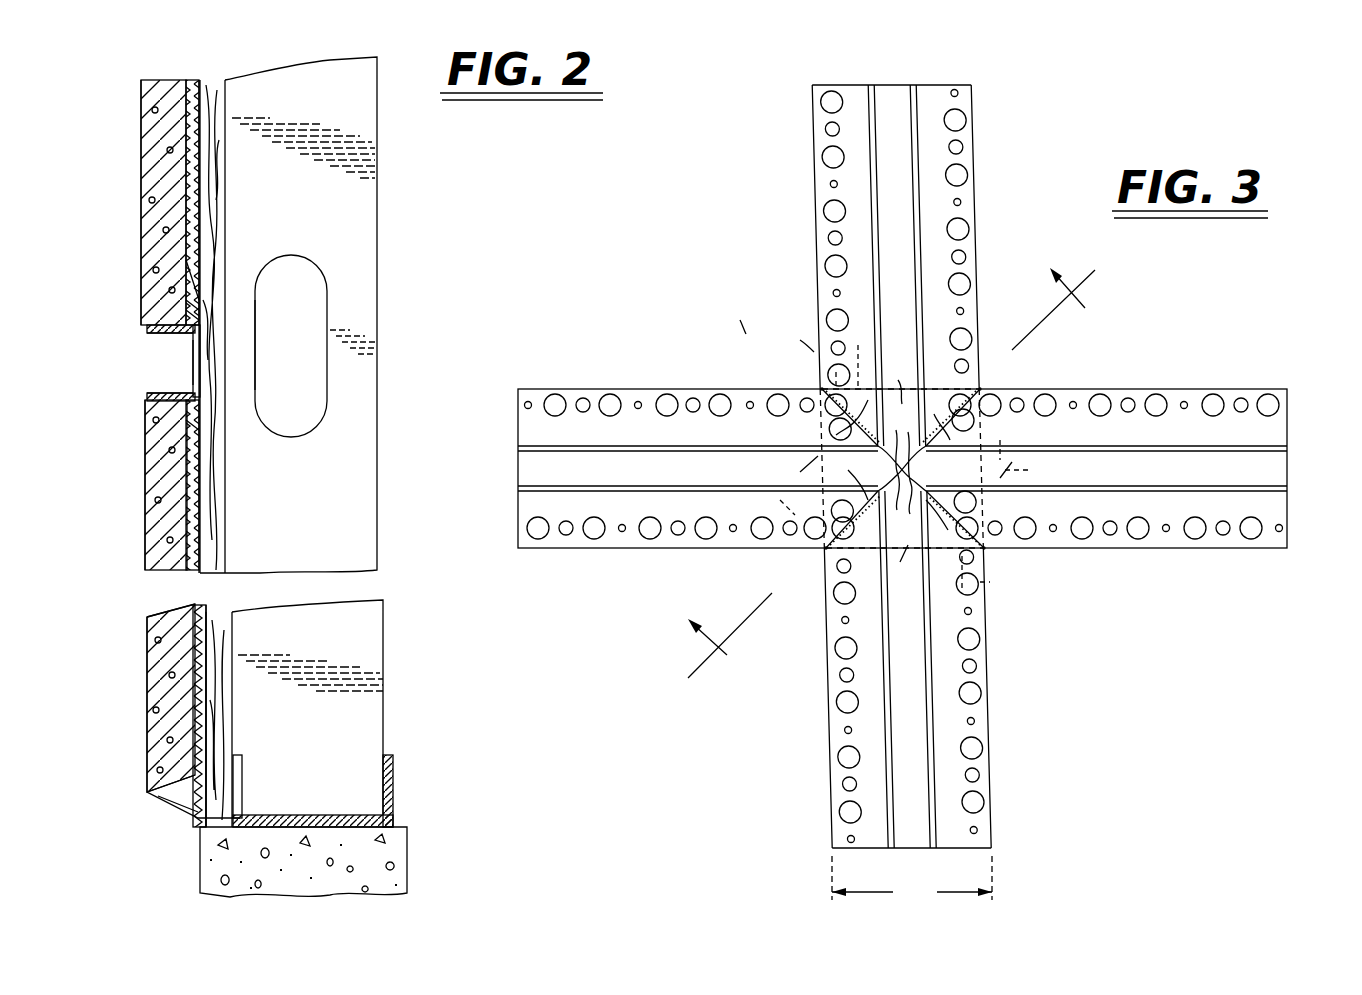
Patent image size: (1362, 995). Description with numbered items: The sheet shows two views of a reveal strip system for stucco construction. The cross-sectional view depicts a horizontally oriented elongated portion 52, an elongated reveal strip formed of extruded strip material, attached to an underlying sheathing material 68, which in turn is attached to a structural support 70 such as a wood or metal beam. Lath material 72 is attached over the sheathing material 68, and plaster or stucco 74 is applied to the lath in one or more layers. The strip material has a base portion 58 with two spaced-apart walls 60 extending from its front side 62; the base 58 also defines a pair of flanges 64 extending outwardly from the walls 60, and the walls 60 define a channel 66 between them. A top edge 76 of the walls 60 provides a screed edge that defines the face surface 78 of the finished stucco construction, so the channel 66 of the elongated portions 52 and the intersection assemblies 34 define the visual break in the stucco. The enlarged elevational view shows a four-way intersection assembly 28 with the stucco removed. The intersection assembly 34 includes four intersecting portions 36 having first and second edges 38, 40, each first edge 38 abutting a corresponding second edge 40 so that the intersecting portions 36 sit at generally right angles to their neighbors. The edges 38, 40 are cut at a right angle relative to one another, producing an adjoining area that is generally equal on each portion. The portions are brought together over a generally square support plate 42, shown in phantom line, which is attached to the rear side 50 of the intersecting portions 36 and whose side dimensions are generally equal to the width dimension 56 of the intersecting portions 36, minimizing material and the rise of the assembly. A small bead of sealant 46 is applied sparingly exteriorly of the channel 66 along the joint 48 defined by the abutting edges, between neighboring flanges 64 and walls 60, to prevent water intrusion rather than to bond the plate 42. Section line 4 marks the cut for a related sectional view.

In FIG. 3, the section line 4 is at (894, 480).
In FIG. 3, the four-way intersection assembly 28 is at (740, 322).
In FIG. 3, the intersection assembly 34 is at (800, 338).
In FIG. 3, the intersecting portions 36 is at (985, 214).
In FIG. 3, the first edge 38 is at (903, 468).
In FIG. 3, the second edge 40 is at (936, 466).
In FIG. 3, the support plate 42 is at (905, 463).
In FIG. 3, the sealant 46 is at (988, 504).
In FIG. 3, the joint 48 is at (822, 388).
In FIG. 2, the rear side 50 is at (230, 318).
In FIG. 2, the elongated portions 52 is at (108, 374).
In FIG. 2, the width dimension 56 is at (303, 862).
In FIG. 3, the width dimension 56 is at (912, 882).
In FIG. 2, the base portion 58 is at (238, 362).
In FIG. 2, the walls 60 is at (185, 345).
In FIG. 3, the walls 60 is at (918, 232).
In FIG. 2, the front side 62 is at (190, 282).
In FIG. 2, the flanges 64 is at (198, 300).
In FIG. 3, the flanges 64 is at (850, 96).
In FIG. 2, the channel 66 is at (185, 375).
In FIG. 3, the channel 66 is at (890, 172).
In FIG. 2, the sheathing material 68 is at (218, 162).
In FIG. 2, the structural support 70 is at (345, 111).
In FIG. 2, the lath material 72 is at (190, 306).
In FIG. 2, the plaster or stucco 74 is at (165, 176).
In FIG. 2, the top edge 76 is at (150, 327).
In FIG. 3, the top edge 76 is at (916, 95).
In FIG. 2, the face surface 78 is at (150, 222).